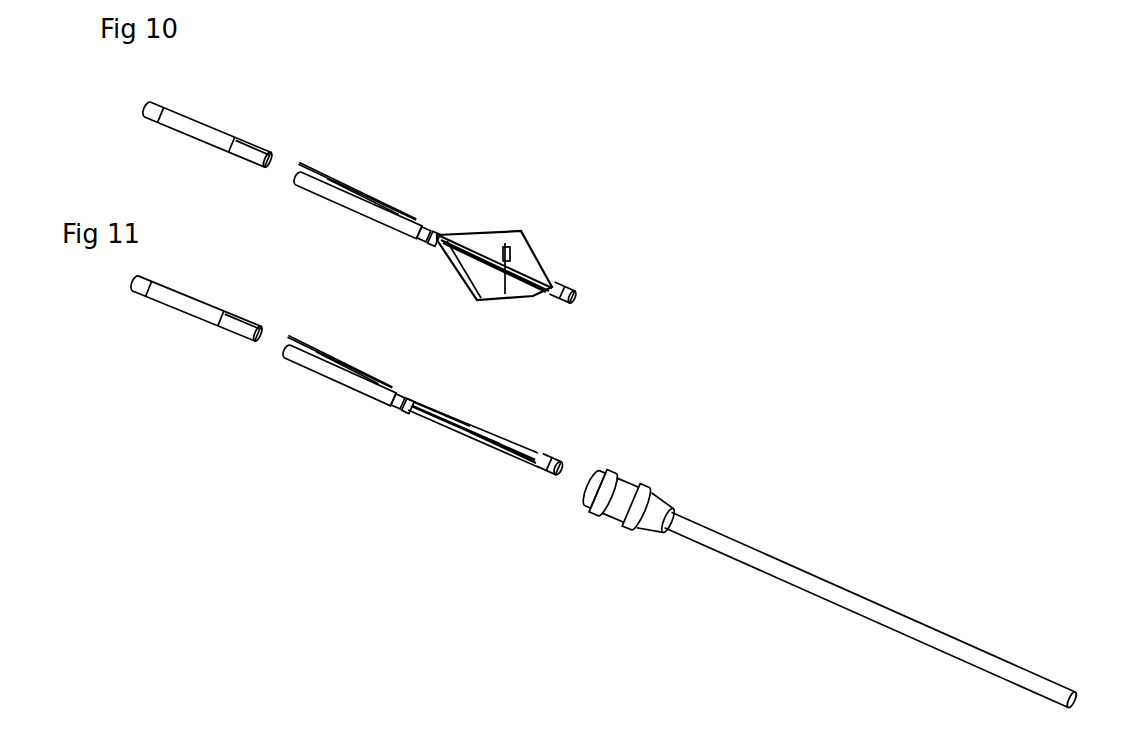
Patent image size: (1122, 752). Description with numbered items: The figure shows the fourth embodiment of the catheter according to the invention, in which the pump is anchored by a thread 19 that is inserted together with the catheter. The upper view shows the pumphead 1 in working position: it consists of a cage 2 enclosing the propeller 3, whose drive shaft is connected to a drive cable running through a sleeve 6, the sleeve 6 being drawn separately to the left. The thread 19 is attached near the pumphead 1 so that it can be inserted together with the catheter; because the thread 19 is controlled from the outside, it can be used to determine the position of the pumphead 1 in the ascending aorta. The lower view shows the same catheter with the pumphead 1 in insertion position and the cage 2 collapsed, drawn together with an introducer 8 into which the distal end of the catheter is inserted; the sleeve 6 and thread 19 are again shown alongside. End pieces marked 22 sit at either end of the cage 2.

In FIG. 10, the medical instrument / basket catheter 1 is at (494, 197).
In FIG. 11, the medical instrument / basket catheter 1 is at (421, 417).
In FIG. 10, the basket 2 is at (465, 282).
In FIG. 10, the strut / wire of basket 3 is at (508, 257).
In FIG. 10, the outer tube / sheath 6 is at (215, 123).
In FIG. 11, the outer tube / sheath 6 is at (181, 300).
In FIG. 11, the handle connector with shaft 8 is at (777, 552).
In FIG. 10, the shaft tube with flap 19 is at (330, 178).
In FIG. 11, the shaft tube with flap 19 is at (327, 345).
In FIG. 10, the end sleeve / tip 22 is at (441, 231).